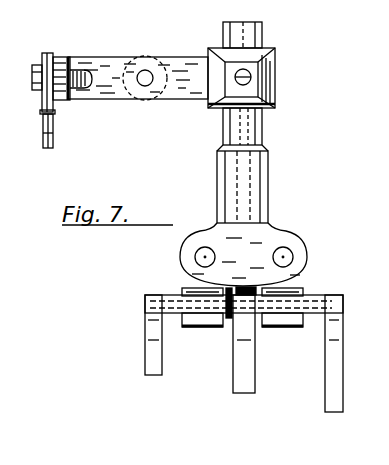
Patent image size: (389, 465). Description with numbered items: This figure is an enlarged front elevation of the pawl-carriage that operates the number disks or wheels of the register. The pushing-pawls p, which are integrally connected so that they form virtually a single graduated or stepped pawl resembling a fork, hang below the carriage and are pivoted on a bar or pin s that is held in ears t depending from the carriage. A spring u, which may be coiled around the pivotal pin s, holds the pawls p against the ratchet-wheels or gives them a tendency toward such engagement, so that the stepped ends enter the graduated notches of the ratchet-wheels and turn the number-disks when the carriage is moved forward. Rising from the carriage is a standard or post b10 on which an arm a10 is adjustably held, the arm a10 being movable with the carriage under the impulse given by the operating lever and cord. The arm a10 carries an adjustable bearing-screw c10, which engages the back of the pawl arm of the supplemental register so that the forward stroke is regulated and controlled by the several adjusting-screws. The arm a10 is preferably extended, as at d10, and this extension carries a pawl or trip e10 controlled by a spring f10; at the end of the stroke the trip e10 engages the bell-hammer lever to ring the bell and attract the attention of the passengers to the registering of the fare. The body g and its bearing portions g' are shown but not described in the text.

The arm a10 is at (168, 58).
The standard or post b10 is at (248, 173).
The adjustable bearing-screw c10 is at (145, 78).
The extension d10 is at (62, 57).
The pawl or trip e10 is at (45, 122).
The spring f10 is at (40, 102).
The lobe body g is at (249, 249).
The hole in lobe g' is at (306, 257).
The bar or pin s is at (317, 306).
The ears t is at (212, 330).
The spring u is at (230, 320).
The pushing-pawls p is at (244, 362).